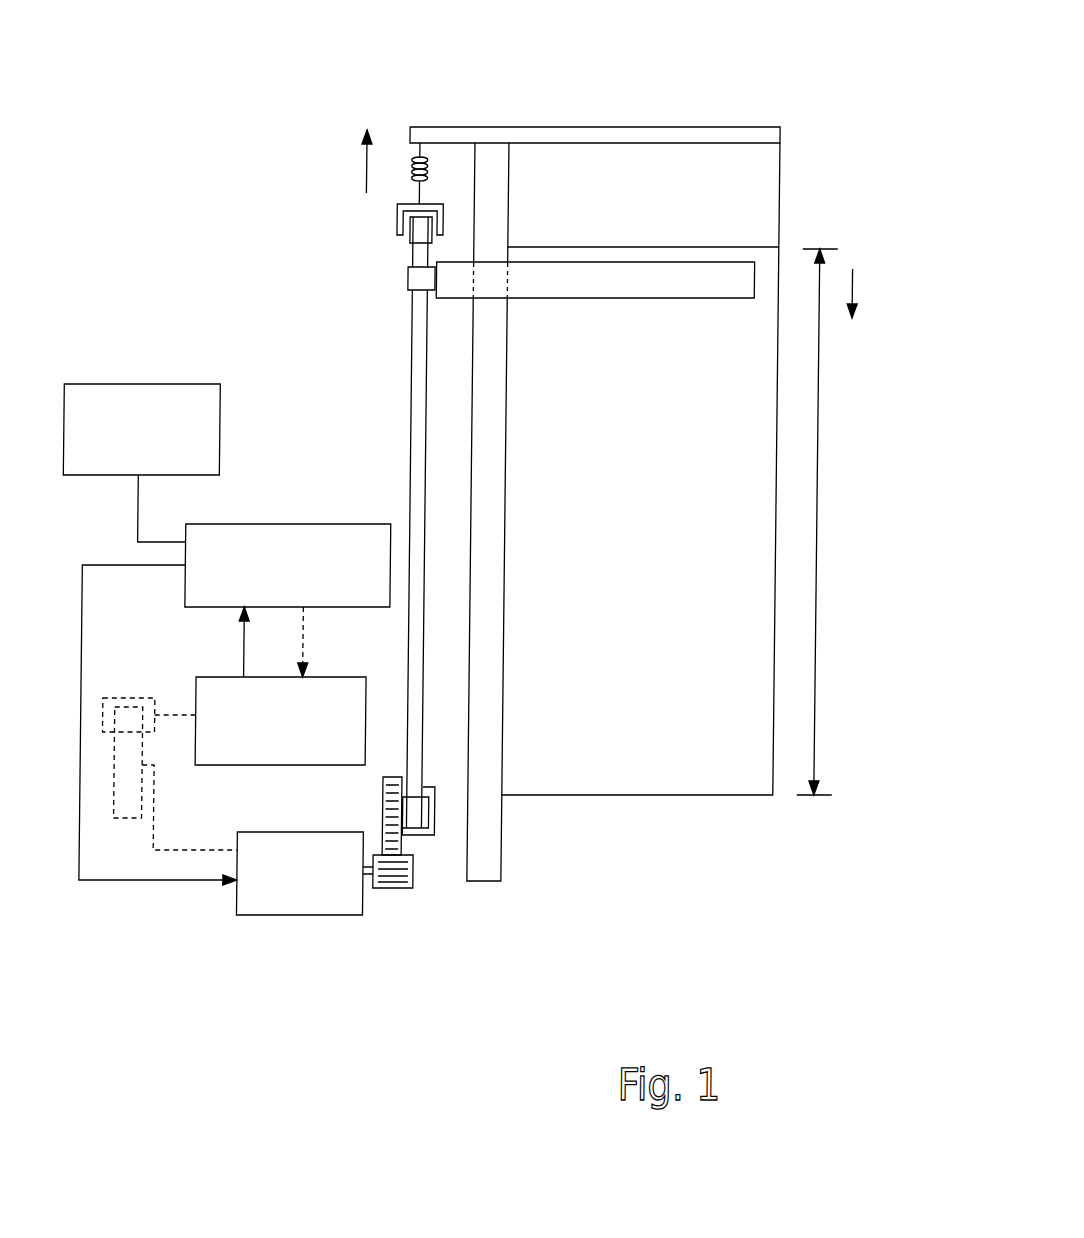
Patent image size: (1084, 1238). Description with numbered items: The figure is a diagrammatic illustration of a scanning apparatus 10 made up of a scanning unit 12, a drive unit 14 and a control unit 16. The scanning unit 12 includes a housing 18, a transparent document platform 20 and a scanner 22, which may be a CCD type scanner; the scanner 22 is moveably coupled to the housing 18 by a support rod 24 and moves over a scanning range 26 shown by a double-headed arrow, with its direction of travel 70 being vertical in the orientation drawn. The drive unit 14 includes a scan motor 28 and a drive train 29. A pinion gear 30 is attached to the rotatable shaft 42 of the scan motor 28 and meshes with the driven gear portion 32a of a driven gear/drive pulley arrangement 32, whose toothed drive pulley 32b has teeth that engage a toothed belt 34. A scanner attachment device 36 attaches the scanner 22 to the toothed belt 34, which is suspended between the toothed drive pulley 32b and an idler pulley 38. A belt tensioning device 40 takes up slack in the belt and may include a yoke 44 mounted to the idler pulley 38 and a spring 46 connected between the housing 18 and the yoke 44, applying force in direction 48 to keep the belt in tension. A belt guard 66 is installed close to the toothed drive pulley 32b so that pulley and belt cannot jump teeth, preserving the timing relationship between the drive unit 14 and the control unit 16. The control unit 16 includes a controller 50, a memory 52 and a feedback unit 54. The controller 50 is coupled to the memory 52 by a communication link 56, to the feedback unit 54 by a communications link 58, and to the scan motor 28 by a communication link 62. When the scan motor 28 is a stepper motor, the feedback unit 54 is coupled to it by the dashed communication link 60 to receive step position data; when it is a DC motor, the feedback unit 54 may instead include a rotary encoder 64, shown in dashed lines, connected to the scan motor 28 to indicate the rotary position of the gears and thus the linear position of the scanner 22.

The scanning apparatus 10 is at (204, 140).
The scanning unit 12 is at (695, 115).
The drive unit 14 is at (420, 118).
The control unit 16 is at (266, 418).
The housing 18 is at (582, 127).
The transparent document platform 20 is at (652, 519).
The scanner 22 is at (602, 294).
The support rod 24 is at (511, 442).
The scanning range 26 is at (824, 487).
The scan motor 28 is at (322, 897).
The drive train 29 is at (406, 898).
The pinion gear 30 is at (437, 890).
The driven gear/drive pulley arrangement 32 is at (380, 820).
The driven gear portion 32a is at (400, 777).
The toothed drive pulley 32b is at (436, 812).
The toothed belt 34 is at (414, 452).
The scanner attachment device 36 is at (409, 280).
The idler pulley 38 is at (405, 237).
The belt tensioning device 40 is at (348, 231).
The rotatable shaft 42 is at (390, 890).
The yoke 44 is at (398, 210).
The spring 46 is at (412, 170).
The direction 48 is at (367, 165).
The controller 50 is at (305, 591).
The memory 52 is at (158, 454).
The feedback unit 54 is at (334, 742).
The communication link 56 is at (142, 505).
The communications link 58 is at (249, 652).
The communication link 60 is at (309, 645).
The communication link 62 is at (88, 733).
The rotary encoder 64 is at (123, 818).
The belt guard 66 is at (428, 838).
The direction of travel 70 is at (856, 290).